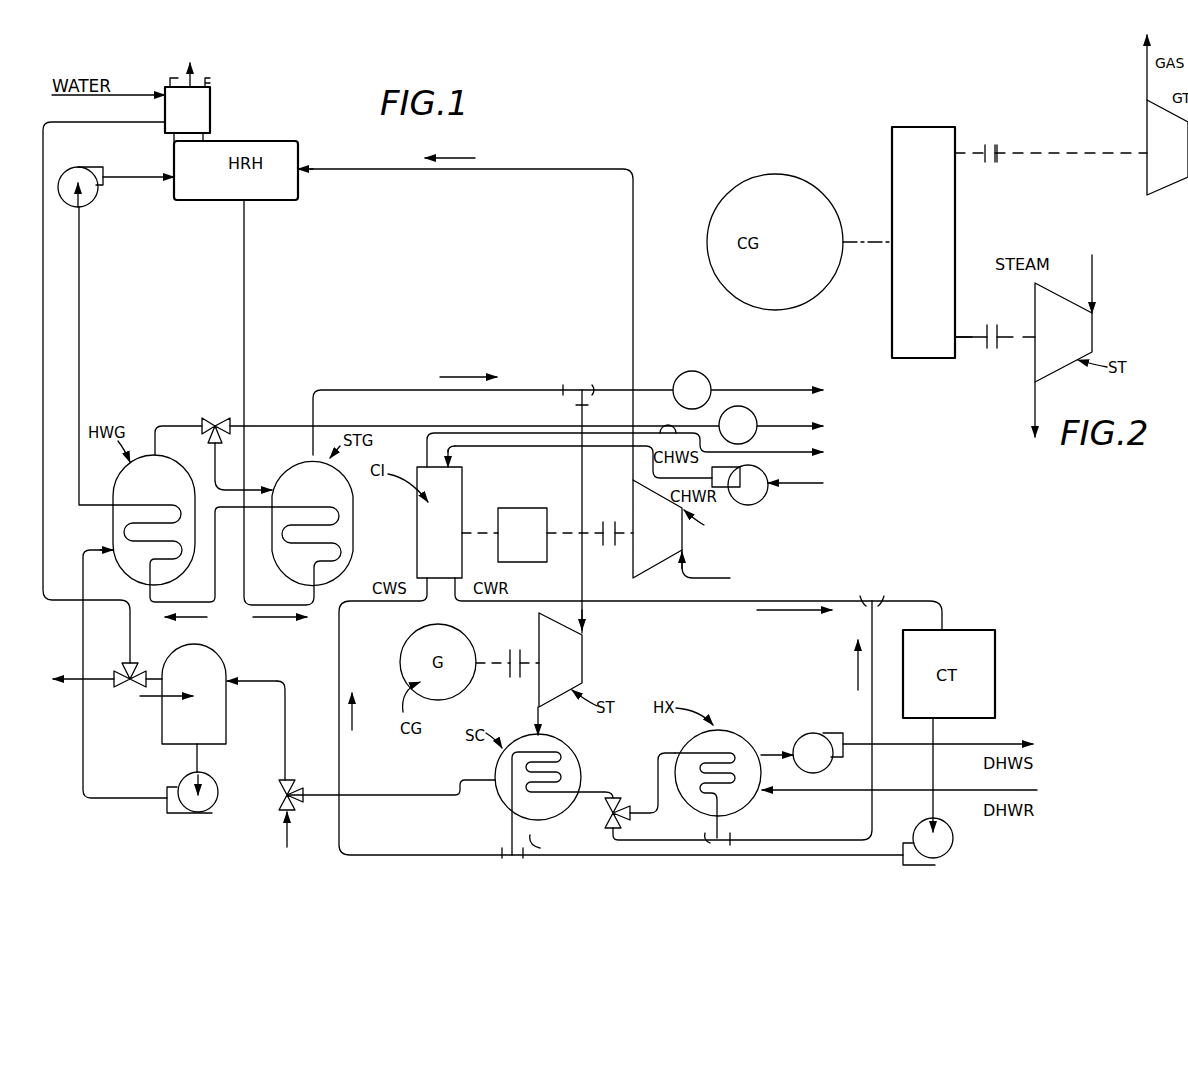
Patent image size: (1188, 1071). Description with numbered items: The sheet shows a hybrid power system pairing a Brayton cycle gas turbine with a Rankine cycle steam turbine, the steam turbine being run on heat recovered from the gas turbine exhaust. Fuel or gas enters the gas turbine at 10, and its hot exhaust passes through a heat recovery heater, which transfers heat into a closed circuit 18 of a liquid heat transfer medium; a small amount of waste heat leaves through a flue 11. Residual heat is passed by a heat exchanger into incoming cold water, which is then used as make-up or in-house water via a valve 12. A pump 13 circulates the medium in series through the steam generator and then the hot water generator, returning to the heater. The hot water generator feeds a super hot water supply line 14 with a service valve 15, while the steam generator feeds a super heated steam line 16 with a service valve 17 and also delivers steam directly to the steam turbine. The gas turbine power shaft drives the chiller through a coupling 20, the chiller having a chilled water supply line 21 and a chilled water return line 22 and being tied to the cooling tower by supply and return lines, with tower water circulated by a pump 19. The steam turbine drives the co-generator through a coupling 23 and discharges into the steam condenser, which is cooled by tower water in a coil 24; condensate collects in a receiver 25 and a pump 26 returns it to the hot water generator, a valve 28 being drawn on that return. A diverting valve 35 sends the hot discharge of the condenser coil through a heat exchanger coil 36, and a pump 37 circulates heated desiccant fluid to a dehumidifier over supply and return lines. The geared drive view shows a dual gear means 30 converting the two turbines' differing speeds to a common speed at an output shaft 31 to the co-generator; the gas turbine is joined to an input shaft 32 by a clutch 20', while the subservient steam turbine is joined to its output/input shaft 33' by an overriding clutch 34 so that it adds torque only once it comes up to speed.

In FIG. 1, the fuel supply 10 is at (705, 578).
In FIG. 1, the flue 11 is at (203, 82).
In FIG. 1, the valve 12 is at (130, 690).
In FIG. 1, the pump 13 is at (90, 193).
In FIG. 1, the super hot water supply line 14 is at (388, 423).
In FIG. 1, the service valve 15 is at (748, 406).
In FIG. 1, the super heated steam line 16 is at (542, 387).
In FIG. 1, the service valve 17 is at (705, 371).
In FIG. 1, the closed circuit 18 is at (246, 305).
In FIG. 1, the pump 19 is at (952, 843).
In FIG. 1, the coupling 20 is at (547, 521).
In FIG. 1, the hot water line 21 is at (522, 423).
In FIG. 1, the chilled water return line 22 is at (542, 447).
In FIG. 1, the coupling 23 is at (515, 648).
In FIG. 1, the coil 24 is at (562, 753).
In FIG. 1, the receiver 25 is at (199, 666).
In FIG. 1, the pump 26 is at (192, 806).
In FIG. 1, the valve 28 is at (279, 797).
In FIG. 1, the diverting valve 35 is at (605, 816).
In FIG. 1, the heat exchanger coil 36 is at (735, 752).
In FIG. 1, the pump 37 is at (827, 740).
In FIG. 2, the clutch 20' is at (1015, 139).
In FIG. 2, the dual gear means 30 is at (940, 213).
In FIG. 2, the output shaft 31 is at (882, 237).
In FIG. 2, the input shaft 32 is at (975, 147).
In FIG. 2, the output/input shaft 33' is at (961, 363).
In FIG. 2, the overriding clutch 34 is at (995, 350).